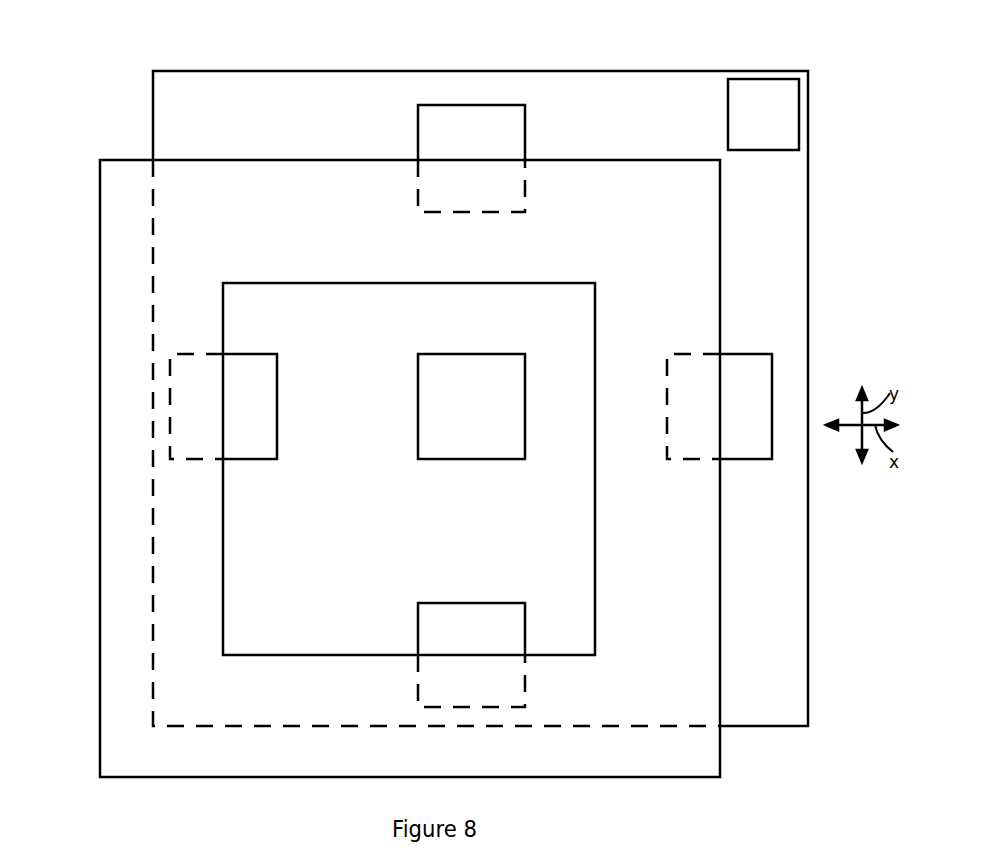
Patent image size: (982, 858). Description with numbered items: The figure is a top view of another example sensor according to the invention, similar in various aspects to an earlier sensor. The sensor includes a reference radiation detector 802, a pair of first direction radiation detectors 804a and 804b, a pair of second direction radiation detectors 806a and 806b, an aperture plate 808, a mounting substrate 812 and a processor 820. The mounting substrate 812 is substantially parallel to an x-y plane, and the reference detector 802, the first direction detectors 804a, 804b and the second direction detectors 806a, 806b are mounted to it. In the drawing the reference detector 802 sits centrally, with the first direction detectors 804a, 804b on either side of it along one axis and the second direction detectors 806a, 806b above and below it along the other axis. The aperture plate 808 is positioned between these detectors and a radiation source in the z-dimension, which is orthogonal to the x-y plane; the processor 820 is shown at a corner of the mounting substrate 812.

The reference radiation detector 802 is at (487, 414).
The first direction radiation detector 804a is at (273, 418).
The first direction radiation detector 804b is at (770, 420).
The second direction radiation detector 806a is at (497, 150).
The second direction radiation detector 806b is at (493, 636).
The aperture plate 808 is at (128, 197).
The mounting substrate 812 is at (293, 133).
The processor 820 is at (780, 126).